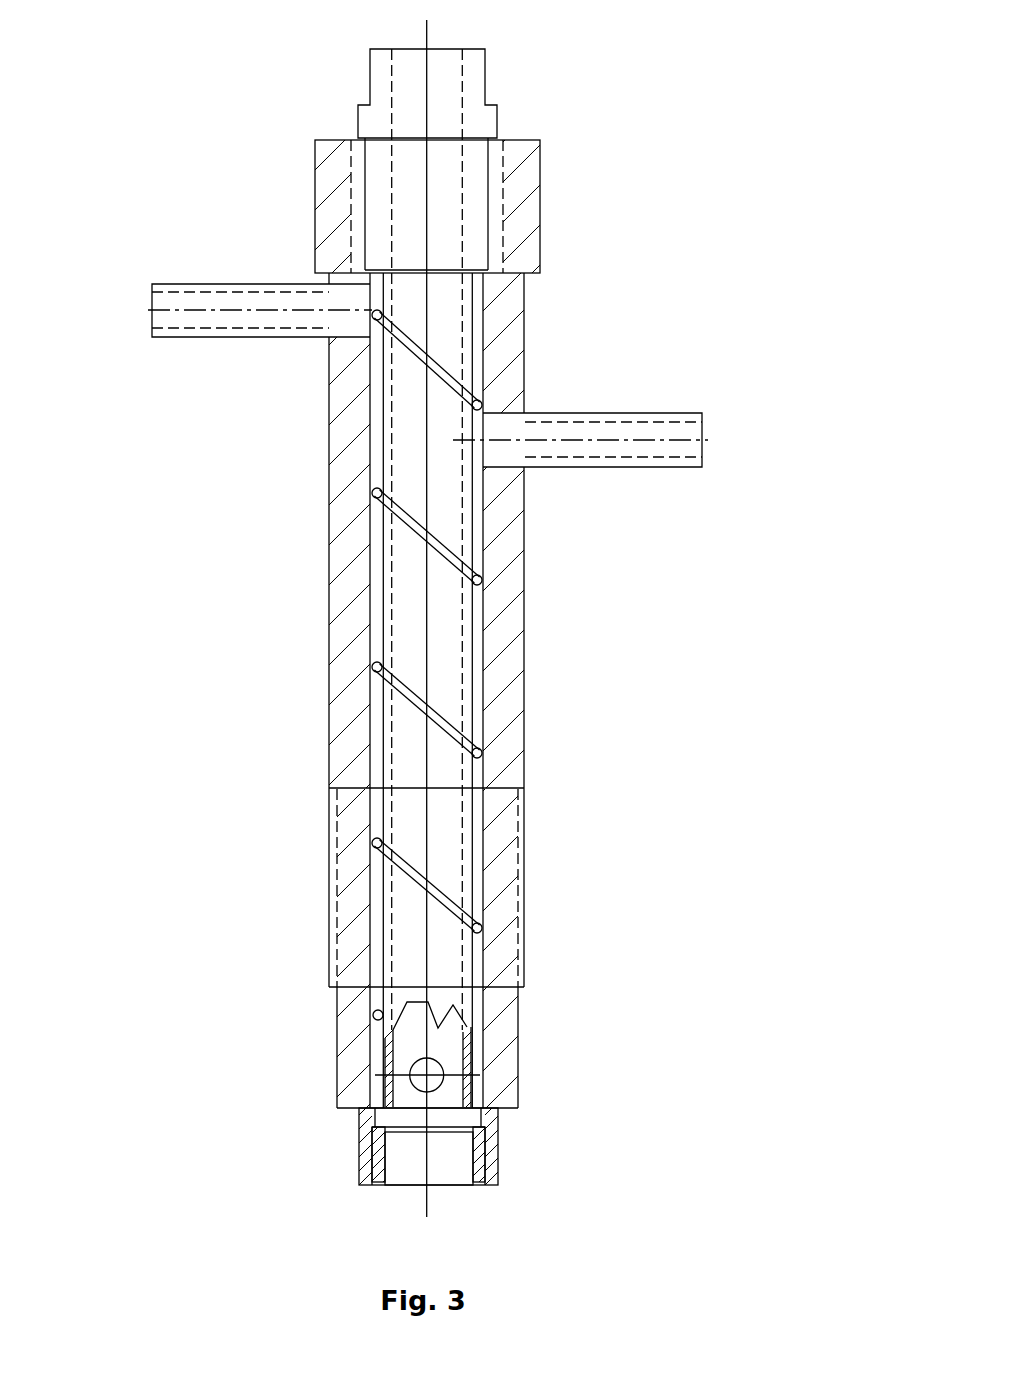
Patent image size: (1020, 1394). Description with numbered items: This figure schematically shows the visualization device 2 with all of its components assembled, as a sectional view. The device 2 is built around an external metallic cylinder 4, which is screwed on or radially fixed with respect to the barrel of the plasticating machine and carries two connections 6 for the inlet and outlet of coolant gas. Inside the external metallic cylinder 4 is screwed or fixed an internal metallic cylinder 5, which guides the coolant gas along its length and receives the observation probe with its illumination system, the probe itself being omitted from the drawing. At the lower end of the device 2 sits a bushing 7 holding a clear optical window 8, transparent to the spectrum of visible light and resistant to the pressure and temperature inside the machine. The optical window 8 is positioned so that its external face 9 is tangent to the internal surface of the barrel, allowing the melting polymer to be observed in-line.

The device 2 is at (553, 140).
The external metallic cylinder 4 is at (498, 632).
The internal metallic cylinder 5 is at (437, 313).
The connections 6 is at (206, 303).
The bushing 7 is at (372, 1153).
The optical window 8 is at (442, 1163).
The external face 9 is at (413, 1184).